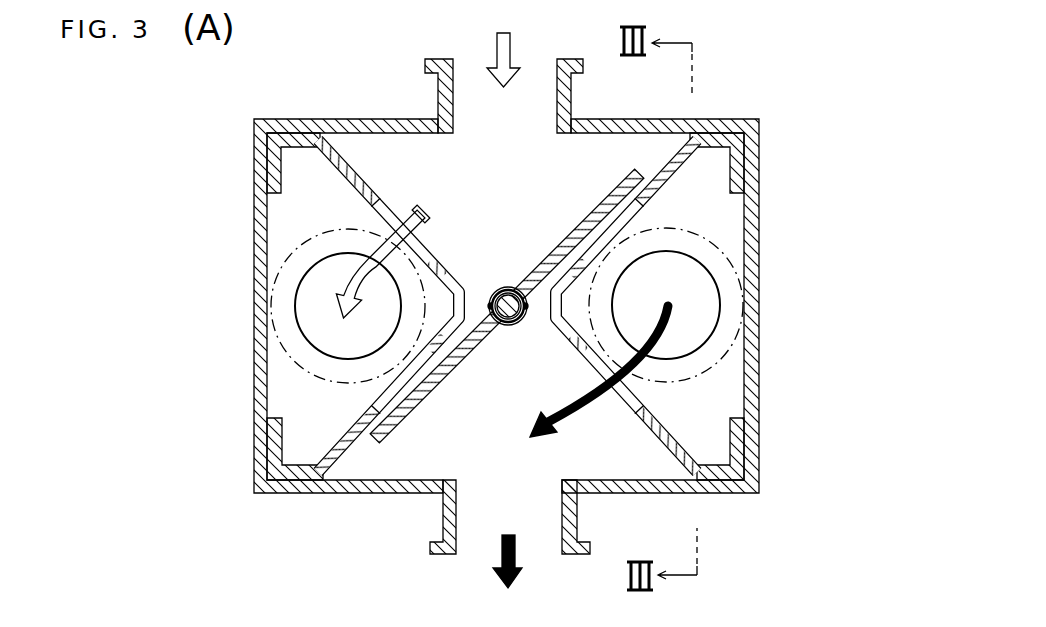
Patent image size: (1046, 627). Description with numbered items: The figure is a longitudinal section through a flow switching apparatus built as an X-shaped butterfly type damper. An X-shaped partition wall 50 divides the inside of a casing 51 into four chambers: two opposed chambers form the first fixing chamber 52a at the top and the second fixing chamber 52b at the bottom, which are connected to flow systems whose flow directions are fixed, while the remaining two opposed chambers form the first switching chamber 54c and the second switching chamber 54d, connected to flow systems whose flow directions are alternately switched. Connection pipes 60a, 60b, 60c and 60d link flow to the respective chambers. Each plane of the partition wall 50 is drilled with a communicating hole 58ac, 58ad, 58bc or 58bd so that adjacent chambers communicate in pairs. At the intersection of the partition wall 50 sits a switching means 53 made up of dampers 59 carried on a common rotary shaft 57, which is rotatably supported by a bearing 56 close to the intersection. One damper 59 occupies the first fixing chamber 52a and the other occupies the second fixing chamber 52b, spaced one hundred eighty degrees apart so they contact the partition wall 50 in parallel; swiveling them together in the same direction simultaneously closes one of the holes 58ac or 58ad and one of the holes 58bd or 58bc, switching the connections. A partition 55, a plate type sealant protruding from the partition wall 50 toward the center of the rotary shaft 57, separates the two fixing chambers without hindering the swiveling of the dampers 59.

The X-shaped partition wall 50 is at (371, 192).
The casing 51 is at (759, 203).
The first fixing chamber 52a is at (535, 203).
The second fixing chamber 52b is at (525, 448).
The switching means 53 is at (524, 334).
The first switching chamber 54c is at (352, 223).
The second switching chamber 54d is at (722, 230).
The partition 55 is at (489, 291).
The bearing 56 is at (506, 327).
The rotary shaft 57 is at (511, 292).
The communicating hole 58ac is at (398, 214).
The communicating hole 58ad is at (612, 228).
The communicating hole 58bc is at (378, 405).
The communicating hole 58bd is at (632, 402).
The damper 59 is at (594, 207).
The connection pipe 60a is at (442, 90).
The connection pipe 60b is at (578, 517).
The connection pipe 60c is at (294, 297).
The connection pipe 60d is at (712, 312).